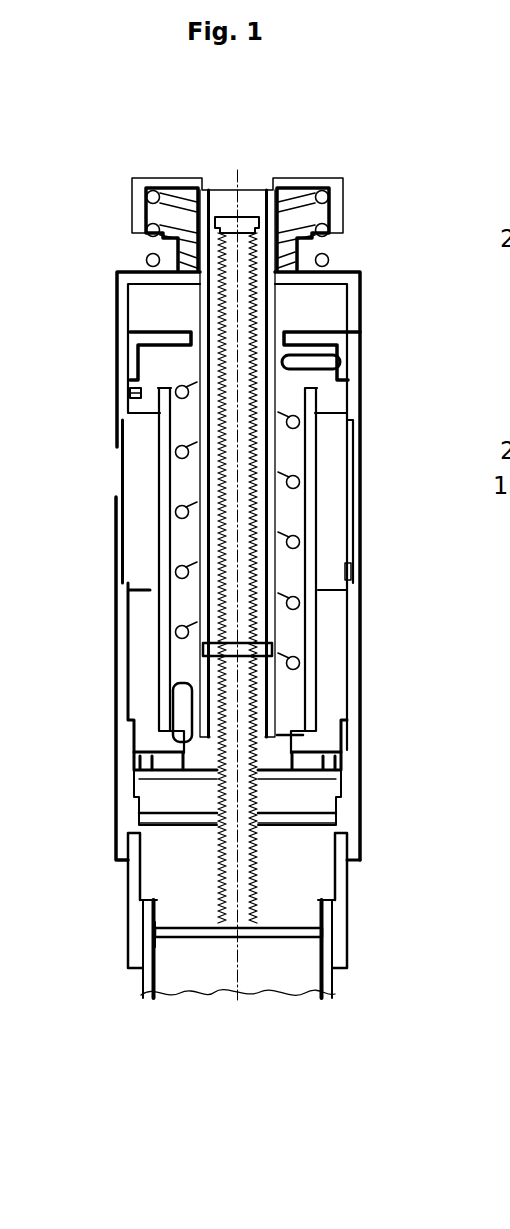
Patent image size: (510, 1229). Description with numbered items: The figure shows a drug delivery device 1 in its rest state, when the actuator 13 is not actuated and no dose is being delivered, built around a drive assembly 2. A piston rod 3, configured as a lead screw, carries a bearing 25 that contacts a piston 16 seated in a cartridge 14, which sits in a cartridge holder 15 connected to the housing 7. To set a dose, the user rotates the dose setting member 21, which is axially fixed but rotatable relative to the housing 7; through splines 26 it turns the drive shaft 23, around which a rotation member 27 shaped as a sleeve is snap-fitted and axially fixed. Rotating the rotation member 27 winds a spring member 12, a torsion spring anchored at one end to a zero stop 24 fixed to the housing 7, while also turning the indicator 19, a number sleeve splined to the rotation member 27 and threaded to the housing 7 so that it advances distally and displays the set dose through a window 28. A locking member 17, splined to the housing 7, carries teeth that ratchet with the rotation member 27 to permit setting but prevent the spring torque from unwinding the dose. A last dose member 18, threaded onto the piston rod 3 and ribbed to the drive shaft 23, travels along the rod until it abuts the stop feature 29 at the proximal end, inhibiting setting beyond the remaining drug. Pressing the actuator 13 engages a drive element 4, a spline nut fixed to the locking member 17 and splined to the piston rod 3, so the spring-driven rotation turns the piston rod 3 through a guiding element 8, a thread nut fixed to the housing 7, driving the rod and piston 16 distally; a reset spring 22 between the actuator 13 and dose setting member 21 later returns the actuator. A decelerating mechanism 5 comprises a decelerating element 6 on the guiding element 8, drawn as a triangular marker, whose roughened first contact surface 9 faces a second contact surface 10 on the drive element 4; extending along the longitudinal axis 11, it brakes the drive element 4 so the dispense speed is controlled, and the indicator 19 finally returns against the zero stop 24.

The drug delivery device 1 is at (112, 195).
The drive assembly 2 is at (133, 770).
The piston rod 3 is at (230, 378).
The drive element 4 is at (333, 775).
The decelerating mechanism 5 is at (372, 805).
The decelerating element 6 is at (343, 813).
The housing 7 is at (123, 590).
The guiding element 8 is at (147, 823).
The first contact surface 9 is at (147, 812).
The second contact surface 10 is at (143, 782).
The longitudinal axis 11 is at (237, 977).
The spring member 12 is at (172, 395).
The actuator 13 is at (350, 200).
The cartridge 14 is at (145, 983).
The cartridge holder 15 is at (133, 900).
The piston 16 is at (192, 957).
The locking member 17 is at (313, 757).
The last dose member 18 is at (215, 652).
The indicator 19 is at (147, 538).
The dose setting member 21 is at (125, 287).
The reset spring 22 is at (322, 230).
The drive shaft 23 is at (270, 310).
The zero stop 24 is at (330, 338).
The bearing 25 is at (283, 933).
The splines 26 is at (282, 277).
The rotation member 27 is at (312, 437).
The window 28 is at (117, 480).
The stop feature 29 is at (225, 222).